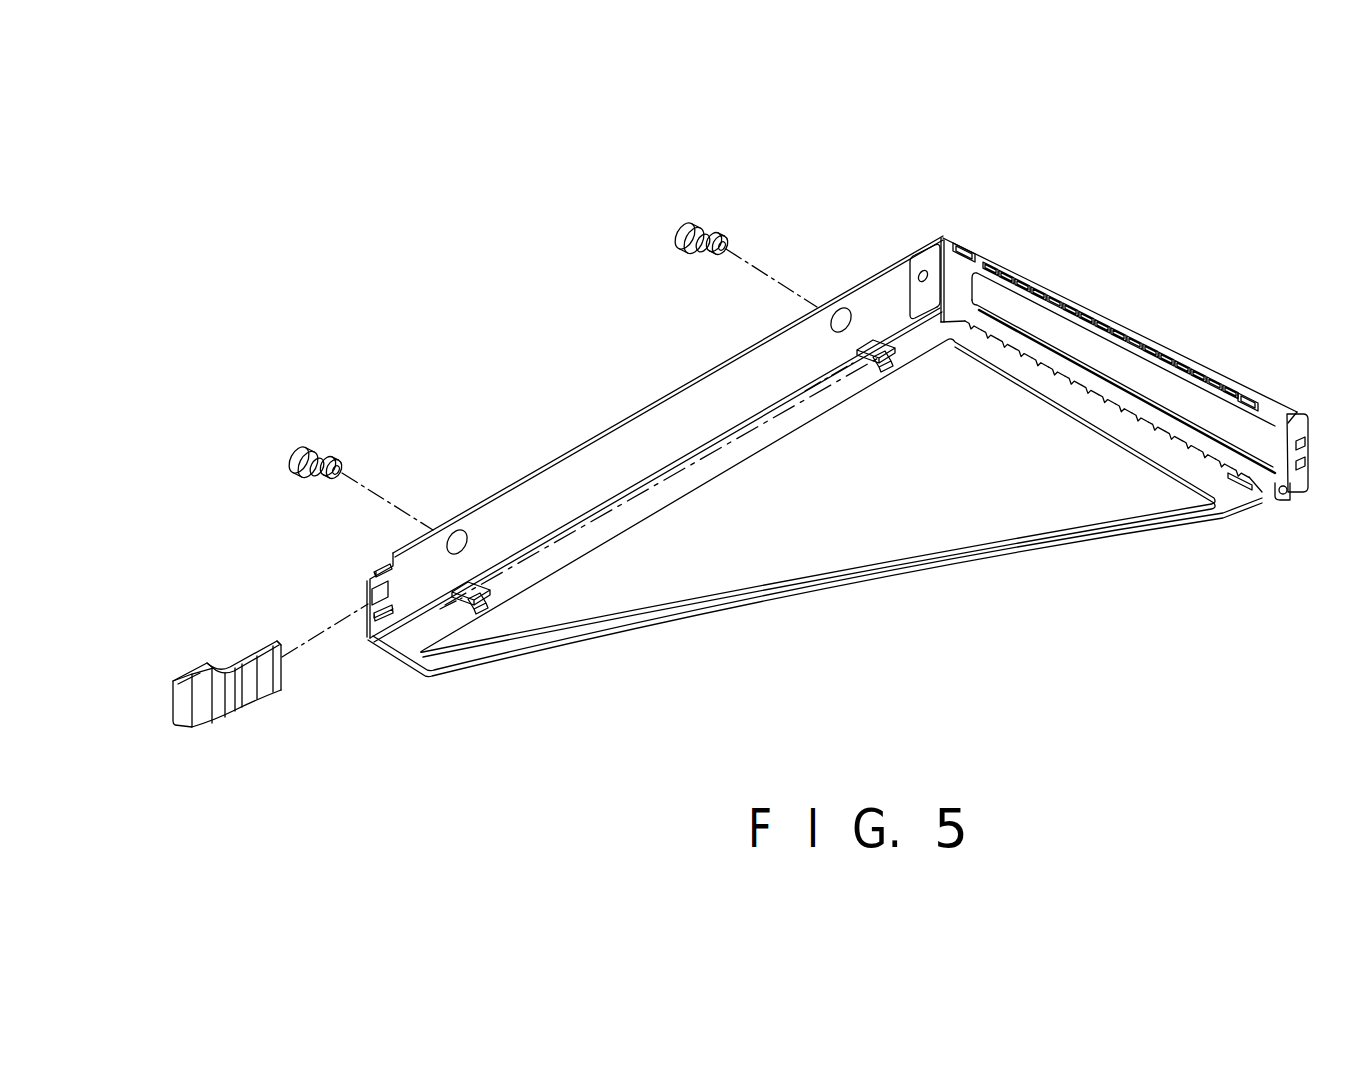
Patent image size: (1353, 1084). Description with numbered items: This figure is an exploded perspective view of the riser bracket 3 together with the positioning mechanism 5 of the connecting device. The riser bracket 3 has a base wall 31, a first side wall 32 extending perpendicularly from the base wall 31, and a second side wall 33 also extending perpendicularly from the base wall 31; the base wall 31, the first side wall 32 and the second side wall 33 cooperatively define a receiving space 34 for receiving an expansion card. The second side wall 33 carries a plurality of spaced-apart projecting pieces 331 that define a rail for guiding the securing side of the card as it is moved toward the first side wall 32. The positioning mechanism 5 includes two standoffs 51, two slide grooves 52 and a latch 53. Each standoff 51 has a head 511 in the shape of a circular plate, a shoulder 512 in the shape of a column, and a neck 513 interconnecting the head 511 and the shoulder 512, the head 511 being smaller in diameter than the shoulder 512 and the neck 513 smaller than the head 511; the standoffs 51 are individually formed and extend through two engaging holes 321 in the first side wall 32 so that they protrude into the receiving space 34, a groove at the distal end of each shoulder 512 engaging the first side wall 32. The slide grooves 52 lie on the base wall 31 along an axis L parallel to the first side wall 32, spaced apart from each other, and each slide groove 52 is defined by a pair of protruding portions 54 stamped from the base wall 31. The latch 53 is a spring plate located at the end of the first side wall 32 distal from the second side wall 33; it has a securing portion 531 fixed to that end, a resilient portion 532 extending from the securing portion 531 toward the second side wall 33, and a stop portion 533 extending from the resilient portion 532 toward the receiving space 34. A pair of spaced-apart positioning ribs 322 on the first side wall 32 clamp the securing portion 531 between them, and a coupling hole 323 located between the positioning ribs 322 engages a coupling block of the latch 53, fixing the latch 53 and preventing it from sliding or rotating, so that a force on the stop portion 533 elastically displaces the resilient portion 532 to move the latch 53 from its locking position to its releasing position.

The riser bracket 3 is at (797, 449).
The base wall 31 is at (917, 542).
The first side wall 32 is at (614, 471).
The engaging holes 321 is at (467, 533).
The positioning ribs 322 is at (390, 562).
The coupling hole 323 is at (377, 588).
The second side wall 33 is at (1106, 342).
The projecting pieces 331 is at (967, 255).
The receiving space 34 is at (787, 527).
The positioning mechanism 5 is at (506, 517).
The standoffs 51 is at (547, 375).
The head 511 is at (342, 470).
The shoulder 512 is at (310, 448).
The neck 513 is at (325, 460).
The slide grooves 52 is at (463, 603).
The latch 53 is at (241, 719).
The securing portion 531 is at (180, 697).
The resilient portion 532 is at (240, 693).
The stop portion 533 is at (280, 672).
The protruding portions 54 is at (460, 588).
The axis L is at (607, 523).